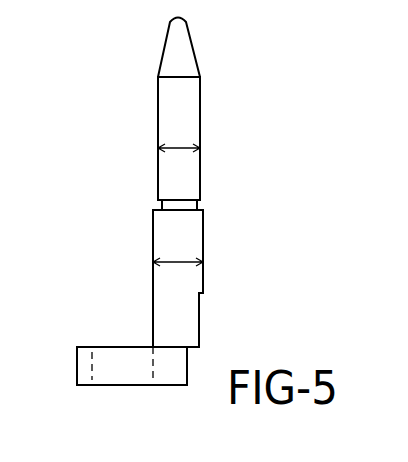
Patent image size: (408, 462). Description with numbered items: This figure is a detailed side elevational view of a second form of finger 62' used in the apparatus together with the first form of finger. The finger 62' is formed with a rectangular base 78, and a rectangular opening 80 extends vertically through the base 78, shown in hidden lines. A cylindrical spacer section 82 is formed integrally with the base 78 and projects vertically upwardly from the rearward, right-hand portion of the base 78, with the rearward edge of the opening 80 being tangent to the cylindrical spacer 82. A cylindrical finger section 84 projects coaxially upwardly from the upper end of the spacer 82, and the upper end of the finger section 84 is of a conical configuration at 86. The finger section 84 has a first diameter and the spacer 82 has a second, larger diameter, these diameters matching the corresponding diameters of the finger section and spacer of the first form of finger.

The conical upper end 86 is at (184, 21).
The cylindrical finger section 84 is at (200, 177).
The cylindrical spacer section 82 is at (201, 278).
The second form of finger 62' is at (246, 101).
The rectangular opening 80 is at (94, 352).
The rectangular base 78 is at (77, 362).